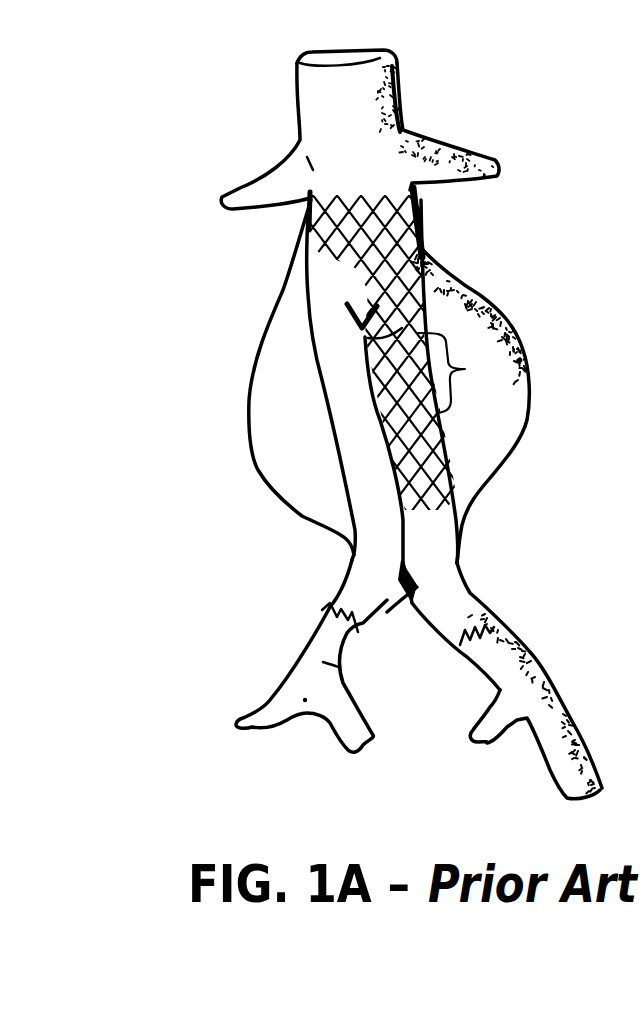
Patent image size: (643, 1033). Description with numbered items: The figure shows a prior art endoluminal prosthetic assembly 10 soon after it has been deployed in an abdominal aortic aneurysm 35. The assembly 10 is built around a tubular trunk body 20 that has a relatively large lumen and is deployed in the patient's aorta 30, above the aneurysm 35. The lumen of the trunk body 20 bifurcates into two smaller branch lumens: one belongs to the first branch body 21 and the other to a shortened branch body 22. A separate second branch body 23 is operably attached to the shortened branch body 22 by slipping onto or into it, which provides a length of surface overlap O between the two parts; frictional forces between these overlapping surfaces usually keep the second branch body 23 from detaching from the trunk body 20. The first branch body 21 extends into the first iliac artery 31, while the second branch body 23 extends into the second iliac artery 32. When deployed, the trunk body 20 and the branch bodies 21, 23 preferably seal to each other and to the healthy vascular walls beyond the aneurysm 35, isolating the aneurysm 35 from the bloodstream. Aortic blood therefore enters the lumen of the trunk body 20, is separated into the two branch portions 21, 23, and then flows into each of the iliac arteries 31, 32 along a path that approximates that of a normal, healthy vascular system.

The endoluminal prosthetic assembly 10 is at (306, 296).
The tubular trunk body 20 is at (387, 230).
The first branch body 21 is at (357, 452).
The shortened branch body 22 is at (400, 327).
The second branch body 23 is at (427, 527).
The aorta 30 is at (360, 120).
The first iliac artery 31 is at (315, 647).
The second iliac artery 32 is at (520, 668).
The abdominal aortic aneurysm 35 is at (483, 453).
The length of surface overlap O is at (452, 373).